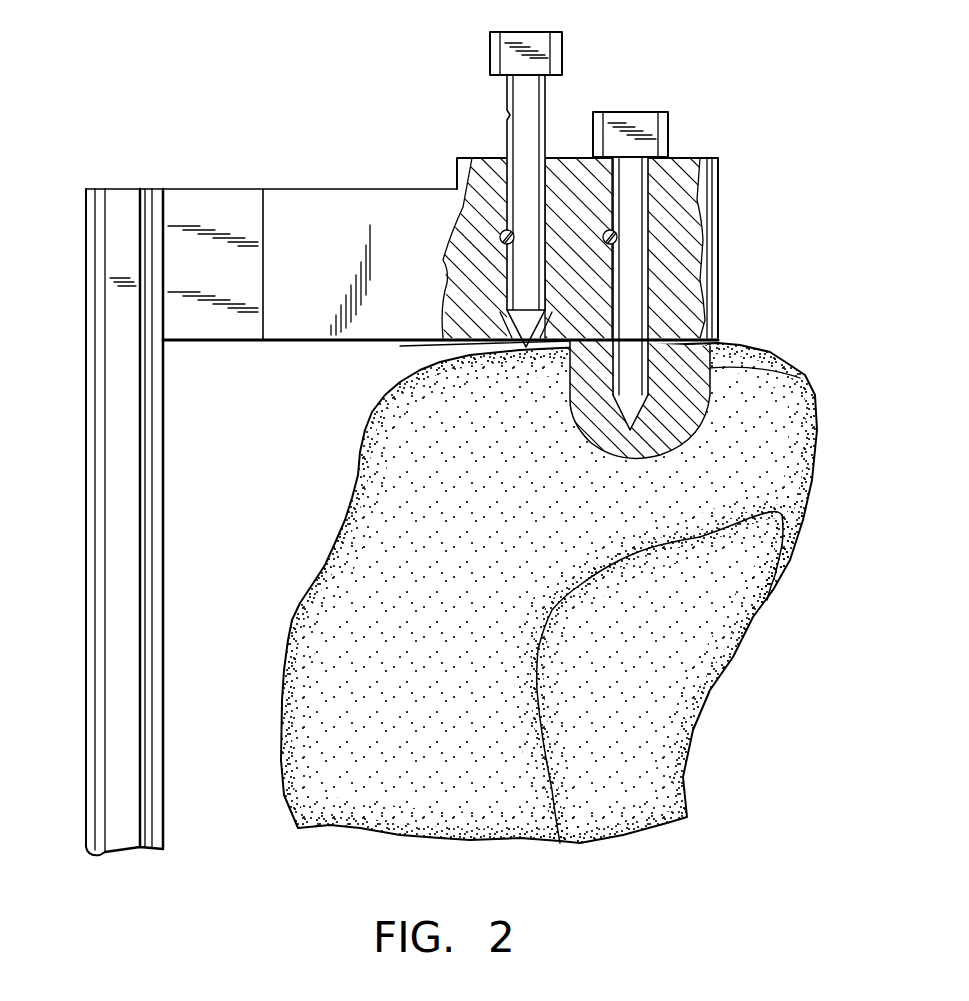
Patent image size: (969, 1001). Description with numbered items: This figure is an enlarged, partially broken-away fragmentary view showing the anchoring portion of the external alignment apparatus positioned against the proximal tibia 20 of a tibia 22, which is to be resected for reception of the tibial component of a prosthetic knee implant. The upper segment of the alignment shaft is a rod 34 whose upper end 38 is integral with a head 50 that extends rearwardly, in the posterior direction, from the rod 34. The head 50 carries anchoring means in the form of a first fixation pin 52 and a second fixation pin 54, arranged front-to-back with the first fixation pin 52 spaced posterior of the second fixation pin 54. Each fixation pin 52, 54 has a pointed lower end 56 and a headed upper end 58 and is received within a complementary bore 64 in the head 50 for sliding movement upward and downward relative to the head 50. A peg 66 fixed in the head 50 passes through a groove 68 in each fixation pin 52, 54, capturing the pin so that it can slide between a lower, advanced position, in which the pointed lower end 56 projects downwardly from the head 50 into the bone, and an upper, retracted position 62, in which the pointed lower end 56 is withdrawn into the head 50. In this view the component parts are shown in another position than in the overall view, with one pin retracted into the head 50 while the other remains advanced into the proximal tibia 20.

The proximal tibia 20 is at (795, 492).
The tibia 22 is at (503, 807).
The rod 34 is at (118, 772).
The upper end 38 is at (115, 188).
The head 50 is at (295, 327).
The first fixation pin 52 is at (647, 190).
The second fixation pin 54 is at (547, 98).
The pointed lower end 56 is at (505, 320).
The headed upper end 58 is at (540, 32).
The retracted position 62 is at (522, 347).
The bore 64 is at (540, 187).
The peg 66 is at (617, 237).
The groove 68 is at (515, 133).